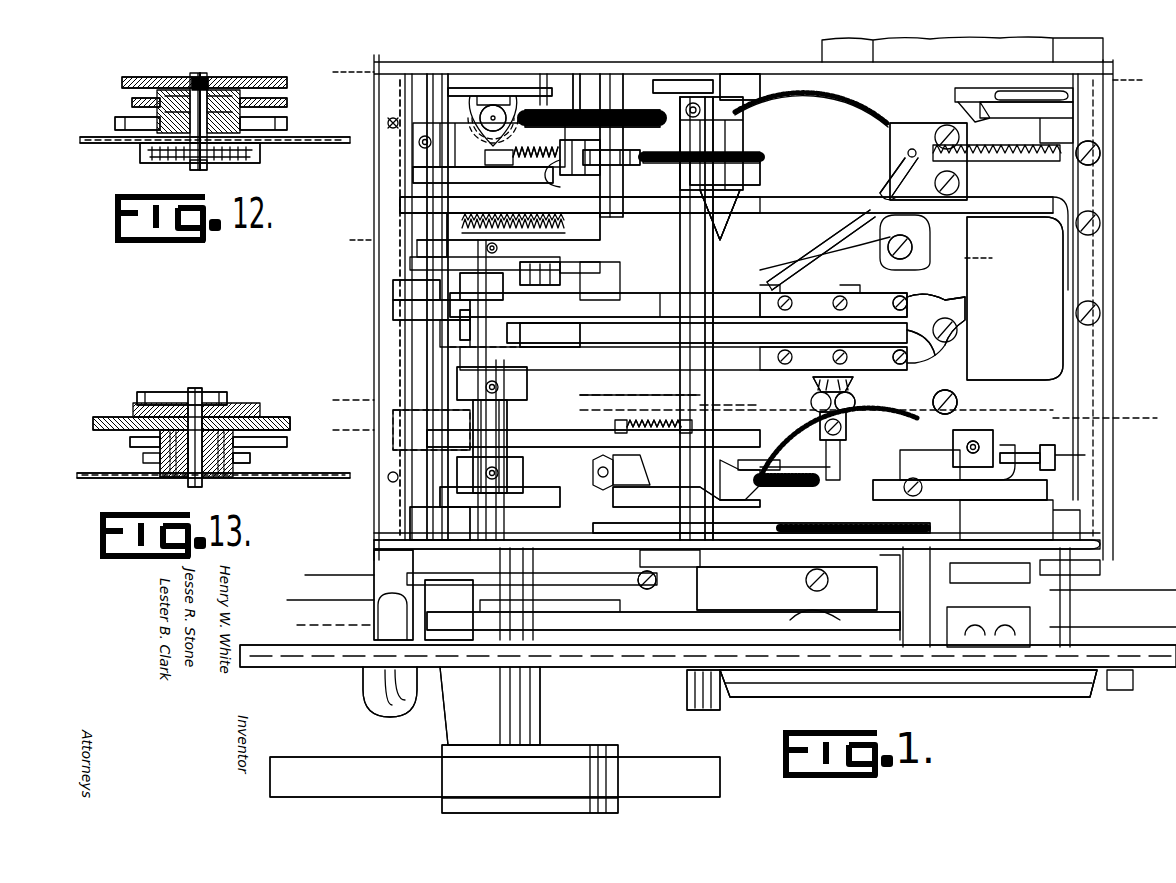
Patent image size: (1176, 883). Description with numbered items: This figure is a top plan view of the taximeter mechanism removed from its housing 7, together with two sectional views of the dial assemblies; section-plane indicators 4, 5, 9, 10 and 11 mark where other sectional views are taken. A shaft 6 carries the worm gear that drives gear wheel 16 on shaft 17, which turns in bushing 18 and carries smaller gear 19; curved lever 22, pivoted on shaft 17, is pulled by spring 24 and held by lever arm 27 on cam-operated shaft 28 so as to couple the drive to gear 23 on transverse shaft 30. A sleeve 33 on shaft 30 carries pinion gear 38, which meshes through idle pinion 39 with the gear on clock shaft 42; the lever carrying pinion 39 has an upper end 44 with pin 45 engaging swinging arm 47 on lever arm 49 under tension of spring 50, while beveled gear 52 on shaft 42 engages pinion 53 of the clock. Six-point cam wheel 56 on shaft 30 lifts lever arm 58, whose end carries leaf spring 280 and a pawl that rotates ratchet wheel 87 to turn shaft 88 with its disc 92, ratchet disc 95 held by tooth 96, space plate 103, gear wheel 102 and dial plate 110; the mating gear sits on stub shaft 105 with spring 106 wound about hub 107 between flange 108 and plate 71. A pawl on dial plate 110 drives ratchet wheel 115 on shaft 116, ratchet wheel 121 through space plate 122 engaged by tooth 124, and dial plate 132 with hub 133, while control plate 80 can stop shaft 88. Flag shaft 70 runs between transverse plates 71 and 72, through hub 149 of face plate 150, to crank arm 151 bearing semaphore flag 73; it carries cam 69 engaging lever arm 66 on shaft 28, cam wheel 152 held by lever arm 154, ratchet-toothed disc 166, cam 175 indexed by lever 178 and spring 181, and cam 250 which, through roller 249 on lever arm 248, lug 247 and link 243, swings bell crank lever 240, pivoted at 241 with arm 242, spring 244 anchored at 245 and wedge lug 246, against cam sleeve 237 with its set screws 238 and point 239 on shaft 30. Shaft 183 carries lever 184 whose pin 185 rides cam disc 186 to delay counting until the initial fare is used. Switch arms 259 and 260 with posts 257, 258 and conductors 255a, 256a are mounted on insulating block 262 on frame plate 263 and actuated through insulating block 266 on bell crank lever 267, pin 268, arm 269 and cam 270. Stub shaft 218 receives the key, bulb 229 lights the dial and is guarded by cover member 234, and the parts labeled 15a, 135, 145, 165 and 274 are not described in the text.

In FIG. 12, the section line 4- 4 is at (336, 78).
In FIG. 1, the section line 4- 4 is at (1146, 88).
In FIG. 1, the section line 5- 5 is at (350, 240).
In FIG. 1, the shaft 6 is at (336, 422).
In FIG. 1, the housing 7 is at (585, 52).
In FIG. 1, the section line 9- 9 is at (305, 575).
In FIG. 1, the section line 10- 10 is at (287, 600).
In FIG. 1, the section line 11- 11 is at (300, 632).
In FIG. 1, the housing 15a is at (470, 92).
In FIG. 1, the gear wheel 16 is at (636, 148).
In FIG. 1, the shaft 17 is at (640, 140).
In FIG. 1, the bushing 18 is at (608, 72).
In FIG. 1, the gear 19 is at (645, 142).
In FIG. 1, the curved lever 22 is at (595, 183).
In FIG. 1, the gear 23 is at (768, 158).
In FIG. 1, the spring 24 is at (528, 150).
In FIG. 1, the lever arm 27 is at (478, 170).
In FIG. 1, the cam-operated shaft 28 is at (420, 375).
In FIG. 1, the shaft 30 is at (790, 264).
In FIG. 1, the sleeve 33 is at (715, 406).
In FIG. 1, the pinion gear 38 is at (770, 445).
In FIG. 1, the idle pinion 39 is at (790, 462).
In FIG. 1, the clock shaft 42 is at (822, 405).
In FIG. 1, the upper end of lever 44 is at (660, 495).
In FIG. 1, the pin 45 is at (690, 430).
In FIG. 1, the swinging arm 47 is at (550, 445).
In FIG. 1, the lever arm 49 is at (456, 455).
In FIG. 1, the tension spring 50 is at (665, 425).
In FIG. 1, the beveled gear 52 is at (855, 378).
In FIG. 1, the pinion 53 is at (856, 402).
In FIG. 1, the six-point cam wheel 56 is at (658, 578).
In FIG. 1, the lever arm 58 is at (600, 515).
In FIG. 1, the lever arm 66 is at (425, 520).
In FIG. 1, the cam 69 is at (548, 508).
In FIG. 1, the cam shaft 70 is at (510, 423).
In FIG. 12, the transverse plate 71 is at (283, 84).
In FIG. 13, the transverse plate 71 is at (115, 417).
In FIG. 1, the transverse plate 71 is at (375, 546).
In FIG. 1, the transverse plate 72 is at (405, 198).
In FIG. 1, the semaphore flag 73 is at (330, 760).
In FIG. 1, the control plate 80 is at (420, 566).
In FIG. 13, the ratchet wheel 87 is at (230, 400).
In FIG. 13, the shaft 88 is at (203, 487).
In FIG. 13, the disc 92 is at (262, 418).
In FIG. 13, the ratchet disc 95 is at (142, 446).
In FIG. 13, the tooth 96 is at (288, 452).
In FIG. 13, the gear wheel 102 is at (245, 466).
In FIG. 13, the space plate 103 is at (148, 470).
In FIG. 1, the stub shaft 105 is at (966, 430).
In FIG. 1, the tension spring 106 is at (1003, 455).
In FIG. 1, the hub 107 is at (993, 438).
In FIG. 1, the flange 108 is at (1045, 445).
In FIG. 13, the dial plate 110 is at (270, 479).
In FIG. 12, the ratchet wheel 115 is at (288, 124).
In FIG. 12, the shaft 116 is at (205, 78).
In FIG. 12, the ratchet wheel 121 is at (132, 102).
In FIG. 12, the space plate 122 is at (248, 78).
In FIG. 12, the tooth 124 is at (288, 102).
In FIG. 12, the dial plate 132 is at (330, 146).
In FIG. 12, the hub 133 is at (262, 150).
In FIG. 12, the shaft end 135 is at (222, 165).
In FIG. 1, the base bar 145 is at (858, 640).
In FIG. 1, the hub 149 is at (535, 692).
In FIG. 1, the face plate 150 is at (330, 668).
In FIG. 1, the crank arm 151 is at (600, 748).
In FIG. 1, the cam wheel 152 is at (580, 638).
In FIG. 1, the lever arm 154 is at (722, 638).
In FIG. 1, the knob 165 is at (390, 712).
In FIG. 1, the disc 166 is at (435, 568).
In FIG. 1, the cam 175 is at (484, 205).
In FIG. 1, the lever 178 is at (590, 255).
In FIG. 1, the spring 181 is at (475, 235).
In FIG. 1, the shaft 183 is at (1063, 250).
In FIG. 1, the lever 184 is at (893, 85).
In FIG. 1, the pin 185 is at (760, 75).
In FIG. 1, the cam disc 186 is at (698, 90).
In FIG. 1, the stub shaft 218 is at (690, 705).
In FIG. 1, the electric bulb 229 is at (808, 640).
In FIG. 1, the cover member 234 is at (775, 697).
In FIG. 1, the cam sleeve 237 is at (700, 233).
In FIG. 1, the set screws 238 is at (690, 185).
In FIG. 1, the point 239 is at (712, 268).
In FIG. 1, the bell crank lever 240 is at (800, 215).
In FIG. 1, the pivot 241 is at (913, 250).
In FIG. 1, the arm 242 is at (898, 158).
In FIG. 1, the link 243 is at (885, 193).
In FIG. 1, the tension spring 244 is at (983, 160).
In FIG. 1, the frame anchorage 245 is at (1102, 153).
In FIG. 1, the wedge shaped lug 246 is at (712, 262).
In FIG. 1, the lug 247 is at (400, 310).
In FIG. 1, the lever arm 248 is at (395, 290).
In FIG. 1, the roller 249 is at (420, 260).
In FIG. 1, the cam 250 is at (478, 274).
In FIG. 1, the conductor 255a is at (950, 303).
In FIG. 1, the conductor 256a is at (958, 348).
In FIG. 1, the post 257 is at (925, 303).
In FIG. 1, the post 258 is at (900, 360).
In FIG. 1, the switch arm 259 is at (893, 298).
In FIG. 1, the switch arm 260 is at (935, 345).
In FIG. 1, the insulating block 262 is at (805, 315).
In FIG. 1, the frame plate 263 is at (893, 358).
In FIG. 1, the insulating block 266 is at (672, 293).
In FIG. 1, the bell crank lever 267 is at (598, 310).
In FIG. 1, the pin 268 is at (540, 285).
In FIG. 1, the arm 269 is at (528, 320).
In FIG. 1, the cam 270 is at (485, 318).
In FIG. 1, the block 274 is at (465, 370).
In FIG. 1, the leaf spring 280 is at (1003, 500).